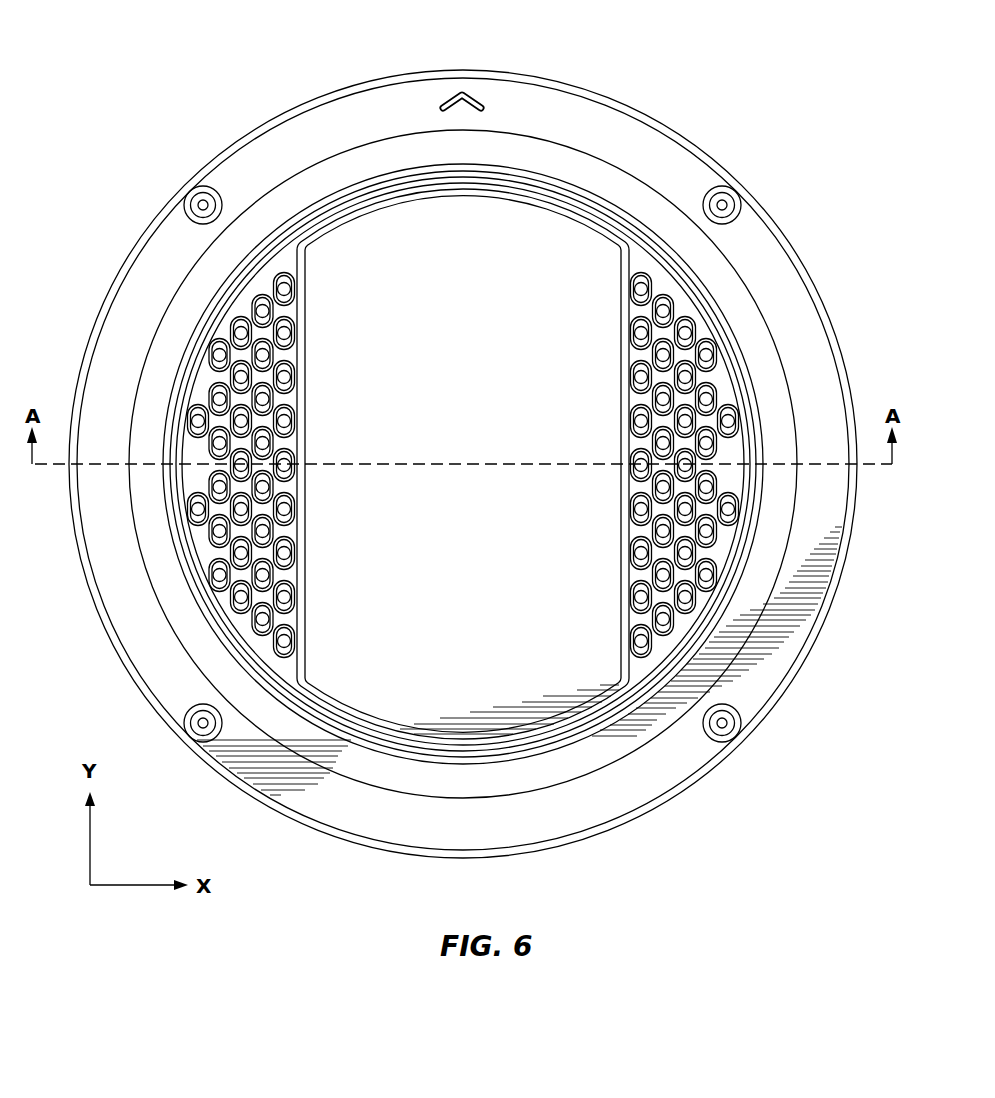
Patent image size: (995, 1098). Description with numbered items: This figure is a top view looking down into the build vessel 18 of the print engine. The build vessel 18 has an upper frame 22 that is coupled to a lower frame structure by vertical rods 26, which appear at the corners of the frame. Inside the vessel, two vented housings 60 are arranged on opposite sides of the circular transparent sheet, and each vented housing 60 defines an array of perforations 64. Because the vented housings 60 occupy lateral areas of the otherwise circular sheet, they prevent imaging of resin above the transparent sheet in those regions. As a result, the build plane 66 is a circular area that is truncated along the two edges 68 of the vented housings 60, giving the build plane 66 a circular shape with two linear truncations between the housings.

The build vessel 18 is at (624, 58).
The upper frame 22 is at (298, 137).
The vertical rods 26 is at (189, 200).
The vented housings 60 is at (718, 393).
The perforations 64 is at (283, 272).
The build plane 66 is at (483, 235).
The edges 68 is at (300, 512).